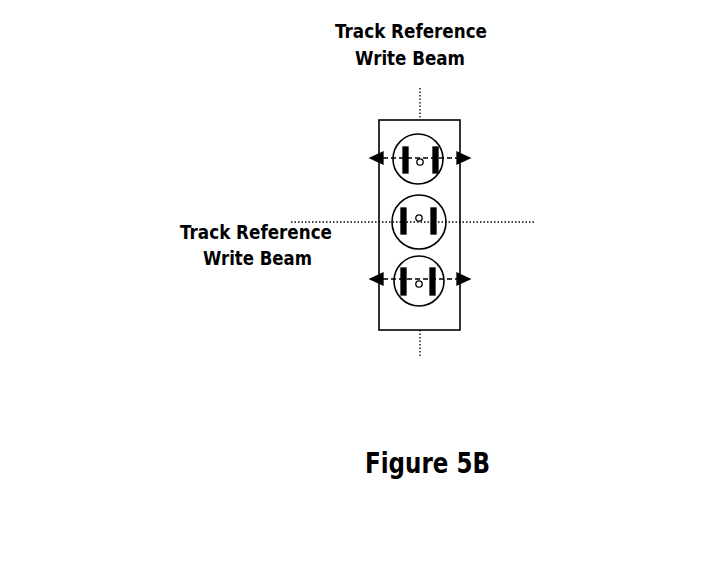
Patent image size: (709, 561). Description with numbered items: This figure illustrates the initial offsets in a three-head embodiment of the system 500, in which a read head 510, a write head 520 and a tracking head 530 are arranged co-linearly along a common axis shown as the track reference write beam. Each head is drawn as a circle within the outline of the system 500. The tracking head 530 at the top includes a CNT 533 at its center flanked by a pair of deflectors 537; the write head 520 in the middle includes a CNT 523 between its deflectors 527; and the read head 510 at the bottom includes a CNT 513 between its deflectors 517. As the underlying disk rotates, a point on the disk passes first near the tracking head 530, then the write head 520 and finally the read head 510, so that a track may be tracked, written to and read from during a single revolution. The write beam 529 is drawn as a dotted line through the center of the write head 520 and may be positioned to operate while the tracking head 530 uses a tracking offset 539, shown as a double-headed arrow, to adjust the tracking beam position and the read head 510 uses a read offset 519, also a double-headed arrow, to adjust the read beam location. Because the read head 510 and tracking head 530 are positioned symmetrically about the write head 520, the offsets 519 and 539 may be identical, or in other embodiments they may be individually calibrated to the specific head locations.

The system 500 is at (403, 331).
The read head 510 is at (424, 300).
The CNT 513 is at (421, 286).
The deflectors 517 is at (432, 296).
The read offset 519 is at (499, 276).
The write head 520 is at (398, 202).
The CNT 523 is at (421, 220).
The deflectors 527 is at (433, 236).
The write beam 529 is at (468, 210).
The tracking head 530 is at (410, 155).
The CNT 533 is at (418, 164).
The deflectors 537 is at (406, 163).
The tracking offset 539 is at (513, 156).